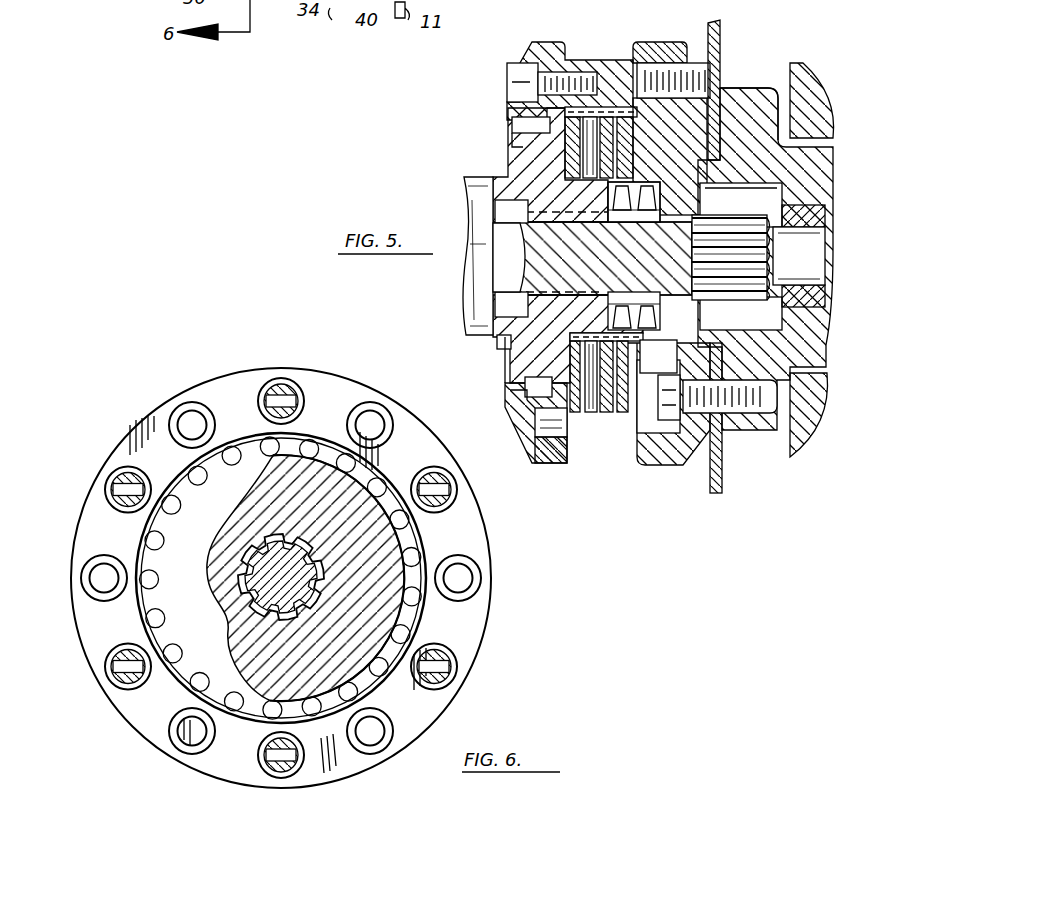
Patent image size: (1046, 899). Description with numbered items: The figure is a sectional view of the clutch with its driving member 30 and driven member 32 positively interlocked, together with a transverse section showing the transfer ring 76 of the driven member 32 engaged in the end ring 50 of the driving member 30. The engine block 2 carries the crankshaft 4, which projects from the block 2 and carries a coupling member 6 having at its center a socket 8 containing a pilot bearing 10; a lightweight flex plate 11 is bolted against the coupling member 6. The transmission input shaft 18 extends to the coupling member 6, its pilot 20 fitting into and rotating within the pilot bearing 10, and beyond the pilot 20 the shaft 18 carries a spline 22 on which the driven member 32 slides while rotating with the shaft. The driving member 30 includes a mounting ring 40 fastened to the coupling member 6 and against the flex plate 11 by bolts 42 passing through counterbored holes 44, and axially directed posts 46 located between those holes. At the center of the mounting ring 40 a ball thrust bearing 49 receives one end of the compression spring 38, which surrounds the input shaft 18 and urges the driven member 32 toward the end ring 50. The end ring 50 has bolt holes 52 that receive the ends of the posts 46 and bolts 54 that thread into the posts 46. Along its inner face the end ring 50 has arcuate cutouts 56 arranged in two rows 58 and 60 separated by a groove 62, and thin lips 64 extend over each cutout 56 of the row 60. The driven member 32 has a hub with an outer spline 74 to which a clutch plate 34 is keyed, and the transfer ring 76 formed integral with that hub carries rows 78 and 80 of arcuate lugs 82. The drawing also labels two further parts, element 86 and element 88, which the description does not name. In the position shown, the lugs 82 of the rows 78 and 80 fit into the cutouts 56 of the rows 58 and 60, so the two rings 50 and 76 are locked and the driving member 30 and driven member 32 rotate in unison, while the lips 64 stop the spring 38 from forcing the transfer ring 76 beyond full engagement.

In FIG. 5, the block 2 is at (810, 100).
In FIG. 5, the crankshaft 4 is at (820, 175).
In FIG. 5, the coupling member 6 is at (762, 88).
In FIG. 5, the socket 8 is at (828, 214).
In FIG. 5, the pilot bearing 10 is at (827, 297).
In FIG. 5, the flex plate 11 is at (722, 33).
In FIG. 5, the input shaft 18 is at (490, 245).
In FIG. 6, the input shaft 18 is at (222, 622).
In FIG. 5, the pilot 20 is at (815, 262).
In FIG. 5, the spline 22 is at (750, 308).
In FIG. 6, the spline 22 is at (258, 625).
In FIG. 5, the driving member 30 is at (652, 466).
In FIG. 5, the driven member 32 is at (626, 182).
In FIG. 6, the driven member 32 is at (368, 603).
In FIG. 5, the clutch plate 34 is at (612, 412).
In FIG. 5, the compression spring 38 is at (655, 200).
In FIG. 5, the mounting ring 40 is at (671, 70).
In FIG. 5, the bolts 42 is at (757, 430).
In FIG. 5, the holes 44 is at (714, 490).
In FIG. 6, the posts 46 is at (300, 377).
In FIG. 5, the ball thrust bearing 49 is at (720, 340).
In FIG. 5, the end ring 50 is at (568, 462).
In FIG. 6, the end ring 50 is at (218, 762).
In FIG. 5, the bolt holes 52 is at (545, 440).
In FIG. 6, the bolt holes 52 is at (372, 750).
In FIG. 5, the bolts 54 is at (505, 84).
In FIG. 6, the bolts 54 is at (276, 381).
In FIG. 6, the arcuate cutouts 56 is at (323, 431).
In FIG. 5, the row of cutouts 58 is at (548, 427).
In FIG. 5, the row of cutouts 60 is at (527, 393).
In FIG. 5, the groove 62 is at (533, 407).
In FIG. 5, the lip 64 is at (520, 383).
In FIG. 6, the lip 64 is at (180, 493).
In FIG. 5, the spline 74 is at (495, 303).
In FIG. 5, the transfer ring 76 is at (545, 210).
In FIG. 6, the transfer ring 76 is at (395, 548).
In FIG. 5, the row of lugs 78 is at (512, 140).
In FIG. 5, the row of lugs 80 is at (512, 125).
In FIG. 6, the arcuate lugs 82 is at (395, 689).
In FIG. 5, the retaining ring 86 is at (512, 338).
In FIG. 5, the shaft end 88 is at (462, 283).